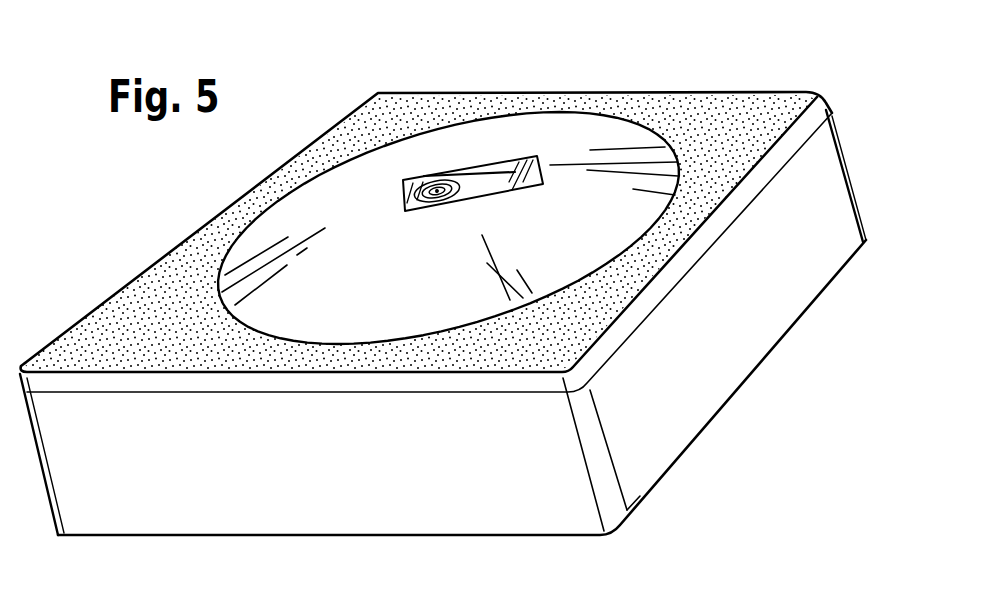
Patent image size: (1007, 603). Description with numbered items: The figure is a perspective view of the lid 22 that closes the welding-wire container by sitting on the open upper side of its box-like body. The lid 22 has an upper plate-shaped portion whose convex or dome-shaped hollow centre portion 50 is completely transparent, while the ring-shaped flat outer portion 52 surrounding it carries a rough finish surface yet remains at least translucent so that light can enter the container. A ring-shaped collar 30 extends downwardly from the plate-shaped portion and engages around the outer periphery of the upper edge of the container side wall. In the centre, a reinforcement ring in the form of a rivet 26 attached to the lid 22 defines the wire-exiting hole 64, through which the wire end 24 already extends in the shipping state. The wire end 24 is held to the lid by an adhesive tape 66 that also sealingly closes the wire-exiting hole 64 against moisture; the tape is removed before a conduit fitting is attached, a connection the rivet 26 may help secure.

The lid 22 is at (133, 281).
The wire end 24 is at (503, 173).
The rivet 26 is at (423, 176).
The ring-shaped collar 30 is at (700, 415).
The centre portion 50 is at (583, 130).
The flat outer portion 52 is at (727, 123).
The wire-exiting hole 64 is at (425, 205).
The adhesive tape 66 is at (533, 183).